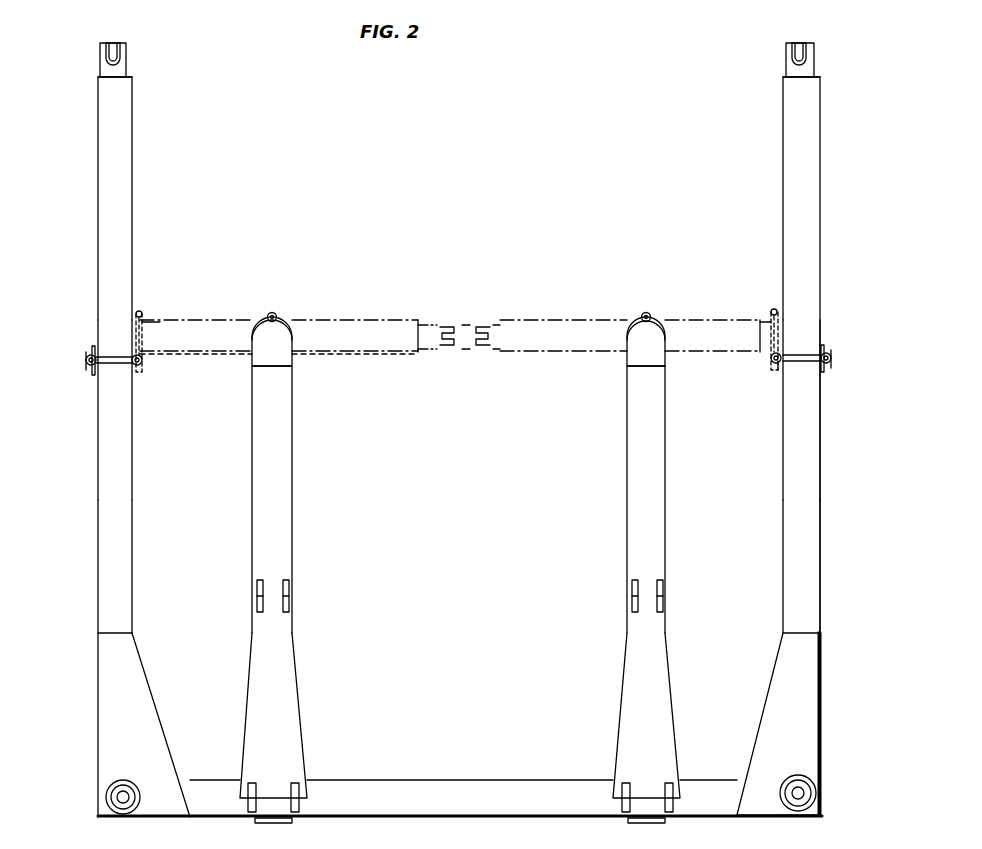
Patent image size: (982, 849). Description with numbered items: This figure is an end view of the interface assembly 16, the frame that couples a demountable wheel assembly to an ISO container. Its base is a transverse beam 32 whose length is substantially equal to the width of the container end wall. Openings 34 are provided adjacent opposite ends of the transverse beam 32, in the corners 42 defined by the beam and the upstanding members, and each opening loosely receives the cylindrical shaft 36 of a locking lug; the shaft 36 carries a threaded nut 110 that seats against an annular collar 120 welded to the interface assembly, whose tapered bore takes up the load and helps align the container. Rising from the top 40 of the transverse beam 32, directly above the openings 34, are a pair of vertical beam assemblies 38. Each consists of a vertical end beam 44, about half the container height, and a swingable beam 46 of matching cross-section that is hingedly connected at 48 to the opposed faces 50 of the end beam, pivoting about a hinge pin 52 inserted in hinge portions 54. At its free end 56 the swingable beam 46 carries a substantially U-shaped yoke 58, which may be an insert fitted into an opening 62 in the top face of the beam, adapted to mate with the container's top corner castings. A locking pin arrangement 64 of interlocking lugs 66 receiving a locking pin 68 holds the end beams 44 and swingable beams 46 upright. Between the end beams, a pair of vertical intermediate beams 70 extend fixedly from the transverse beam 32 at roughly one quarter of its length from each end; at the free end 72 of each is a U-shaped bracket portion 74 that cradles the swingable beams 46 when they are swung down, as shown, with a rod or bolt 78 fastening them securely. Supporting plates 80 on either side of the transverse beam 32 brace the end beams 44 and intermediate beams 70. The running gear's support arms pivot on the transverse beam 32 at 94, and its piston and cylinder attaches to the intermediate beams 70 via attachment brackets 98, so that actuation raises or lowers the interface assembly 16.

The interface assembly 16 is at (838, 155).
The transverse beam 32 is at (470, 780).
The openings 34 is at (106, 788).
The cylindrical shaft 36 is at (797, 797).
The vertical beam assemblies 38 is at (88, 374).
The top of the transverse beam 40 is at (200, 780).
The corners 42 is at (100, 820).
The vertical end beams 44 is at (98, 524).
The swingable beam 46 is at (132, 178).
The hinged connection 48 is at (146, 372).
The opposed faces 50 is at (132, 441).
The hinge pin 52 is at (146, 364).
The hinge portions 54 is at (775, 368).
The free end 56 is at (132, 77).
The U-shaped yoke 58 is at (118, 43).
The opening 62 is at (100, 75).
The locking pin arrangement 64 is at (82, 354).
The interlocking lugs 66 is at (86, 361).
The locking pin 68 is at (92, 352).
The vertical intermediate beams 70 is at (292, 441).
The free end 72 is at (262, 308).
The U-shaped bracket portion 74 is at (283, 340).
The rod or bolt 78 is at (276, 316).
The supporting plates 80 is at (138, 740).
The pivotal connection 94 is at (300, 800).
The attachment brackets 98 is at (289, 600).
The threaded nut 110 is at (778, 806).
The annular collar 120 is at (816, 785).